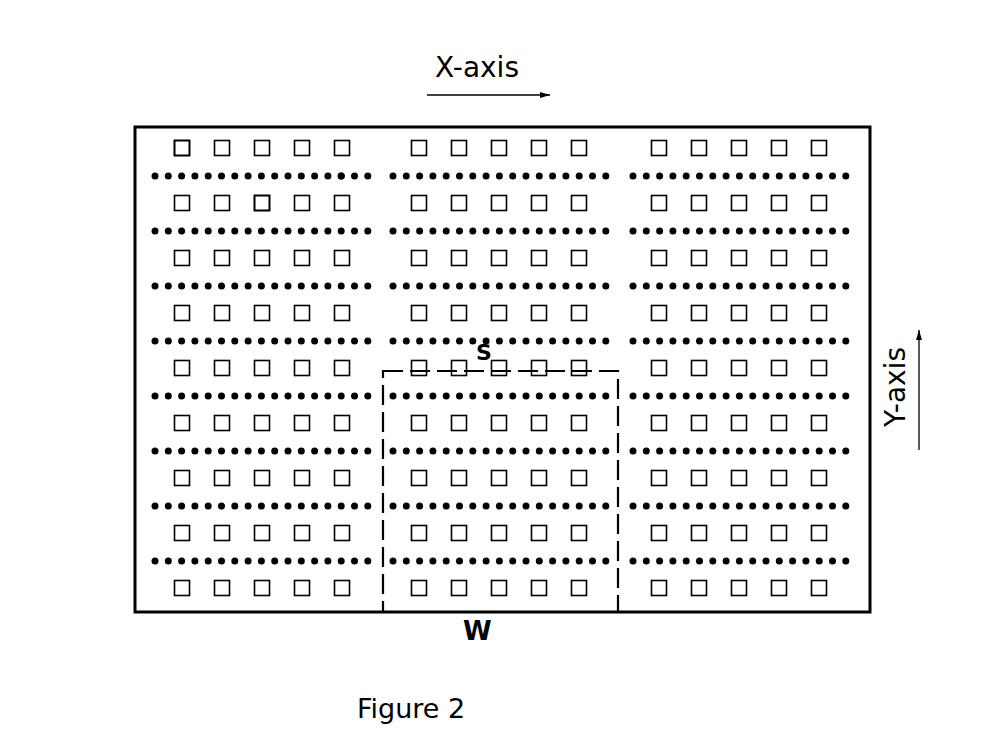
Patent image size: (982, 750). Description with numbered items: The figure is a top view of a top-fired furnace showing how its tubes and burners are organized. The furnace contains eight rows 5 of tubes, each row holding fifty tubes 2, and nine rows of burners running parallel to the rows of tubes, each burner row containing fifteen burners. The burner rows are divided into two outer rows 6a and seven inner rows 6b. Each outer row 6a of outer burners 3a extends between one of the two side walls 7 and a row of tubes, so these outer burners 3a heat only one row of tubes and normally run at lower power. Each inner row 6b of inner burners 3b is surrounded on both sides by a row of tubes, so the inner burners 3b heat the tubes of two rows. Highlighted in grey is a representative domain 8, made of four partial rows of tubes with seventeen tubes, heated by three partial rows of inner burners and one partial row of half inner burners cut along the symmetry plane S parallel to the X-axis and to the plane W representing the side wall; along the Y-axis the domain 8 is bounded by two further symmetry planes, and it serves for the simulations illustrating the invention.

The side wall 7 is at (652, 124).
The outer burner 3a is at (179, 146).
The inner burner 3b is at (259, 192).
The tube 2 is at (339, 173).
The row of tubes 5 is at (143, 342).
The inner row of burners 6b is at (151, 472).
The outer row of burners 6a is at (151, 586).
The representative domain 8 is at (606, 598).